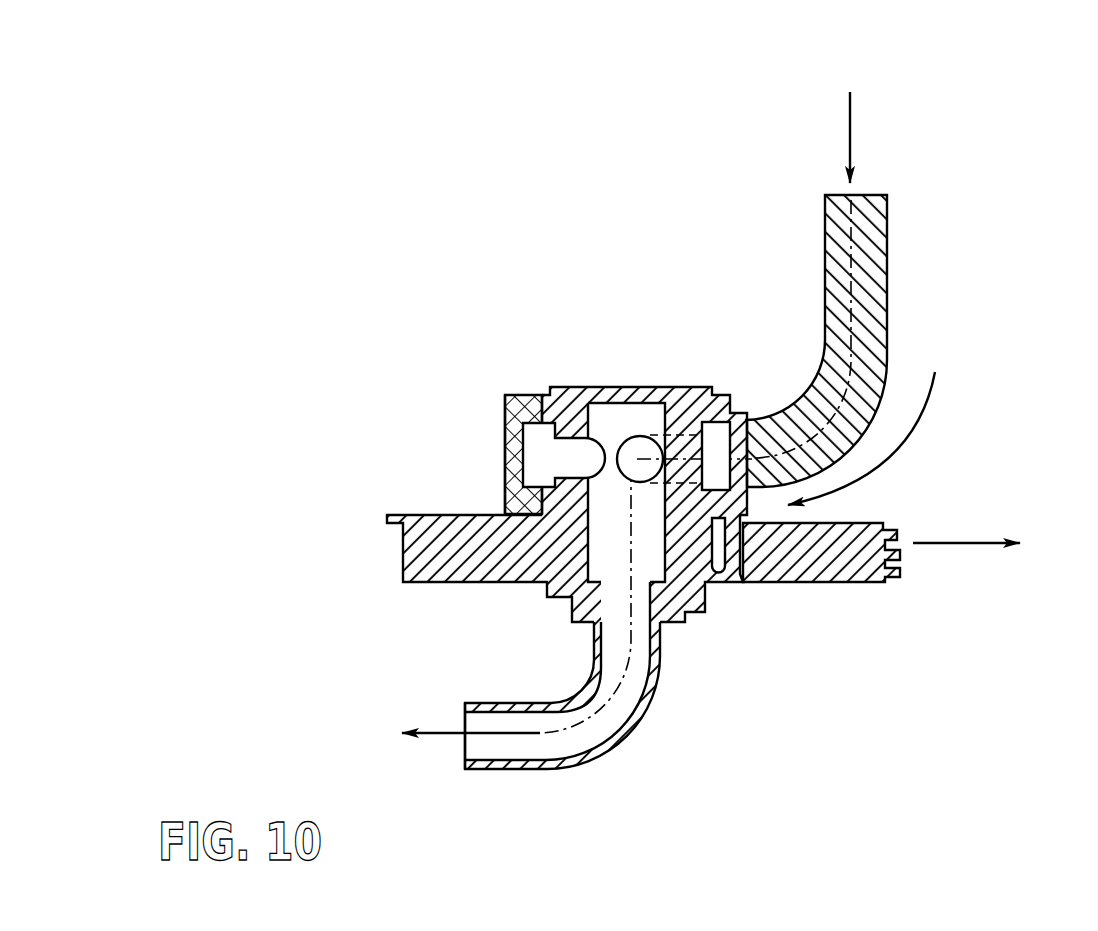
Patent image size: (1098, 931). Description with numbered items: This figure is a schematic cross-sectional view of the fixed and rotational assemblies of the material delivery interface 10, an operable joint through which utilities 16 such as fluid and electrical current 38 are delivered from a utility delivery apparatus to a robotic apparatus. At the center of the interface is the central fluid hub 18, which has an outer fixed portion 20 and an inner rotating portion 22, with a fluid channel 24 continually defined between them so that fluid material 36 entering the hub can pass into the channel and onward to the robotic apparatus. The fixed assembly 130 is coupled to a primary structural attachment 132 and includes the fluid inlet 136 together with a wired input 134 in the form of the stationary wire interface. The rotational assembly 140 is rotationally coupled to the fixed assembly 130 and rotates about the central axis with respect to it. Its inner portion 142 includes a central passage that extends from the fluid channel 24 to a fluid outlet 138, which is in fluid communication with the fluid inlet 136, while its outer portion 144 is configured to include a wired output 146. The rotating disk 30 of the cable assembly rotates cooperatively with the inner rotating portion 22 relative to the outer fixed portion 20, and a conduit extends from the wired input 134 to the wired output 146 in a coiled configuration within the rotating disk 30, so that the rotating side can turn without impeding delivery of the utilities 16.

The material delivery interface 10 is at (671, 402).
The utilities 16 is at (883, 101).
The central fluid hub 18 is at (498, 328).
The outer fixed portion 20 is at (505, 446).
The inner rotating portion 22 is at (570, 387).
The fluid channel 24 is at (540, 457).
The rotating disk 30 is at (448, 583).
The fluid material 36 is at (852, 150).
The electrical current 38 is at (915, 440).
The fixed assembly 130 is at (496, 415).
The primary structural attachment 132 is at (730, 395).
The wired input 134 is at (722, 545).
The fluid inlet 136 is at (739, 441).
The fluid outlet 138 is at (647, 626).
The rotational assembly 140 is at (631, 383).
The inner portion 142 is at (693, 385).
The outer portion 144 is at (493, 470).
The wired output 146 is at (900, 560).